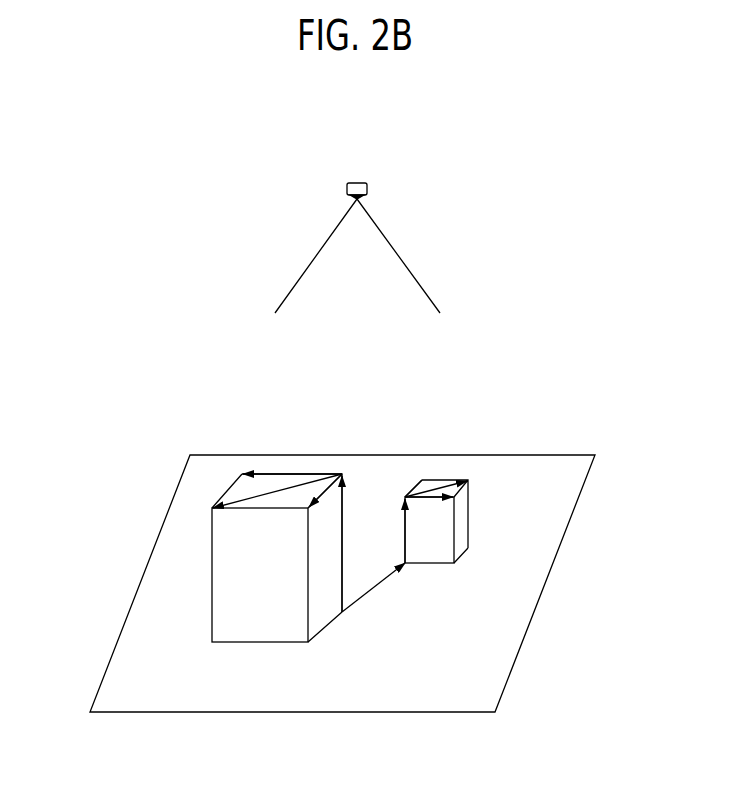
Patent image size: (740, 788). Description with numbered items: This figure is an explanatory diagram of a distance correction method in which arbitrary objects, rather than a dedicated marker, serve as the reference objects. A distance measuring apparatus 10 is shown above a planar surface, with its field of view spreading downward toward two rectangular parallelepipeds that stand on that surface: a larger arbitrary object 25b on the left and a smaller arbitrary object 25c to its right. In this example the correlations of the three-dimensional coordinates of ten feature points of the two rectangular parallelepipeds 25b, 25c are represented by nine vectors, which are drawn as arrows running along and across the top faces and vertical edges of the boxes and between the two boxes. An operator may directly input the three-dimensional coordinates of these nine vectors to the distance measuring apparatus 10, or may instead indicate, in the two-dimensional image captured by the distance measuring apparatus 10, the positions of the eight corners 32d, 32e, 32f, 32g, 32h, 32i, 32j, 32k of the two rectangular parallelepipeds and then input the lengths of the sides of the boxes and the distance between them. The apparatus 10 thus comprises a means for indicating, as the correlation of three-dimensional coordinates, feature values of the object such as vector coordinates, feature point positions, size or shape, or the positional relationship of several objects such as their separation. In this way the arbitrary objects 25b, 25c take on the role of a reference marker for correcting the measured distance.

The distance measuring apparatus 10 is at (370, 189).
The arbitrary object 25b is at (223, 562).
The arbitrary object 25c is at (445, 548).
The corner 32d is at (342, 474).
The corner 32e is at (243, 474).
The corner 32f is at (212, 507).
The corner 32g is at (309, 507).
The corner 32h is at (405, 497).
The corner 32i is at (455, 495).
The corner 32j is at (470, 481).
The corner 32k is at (422, 480).